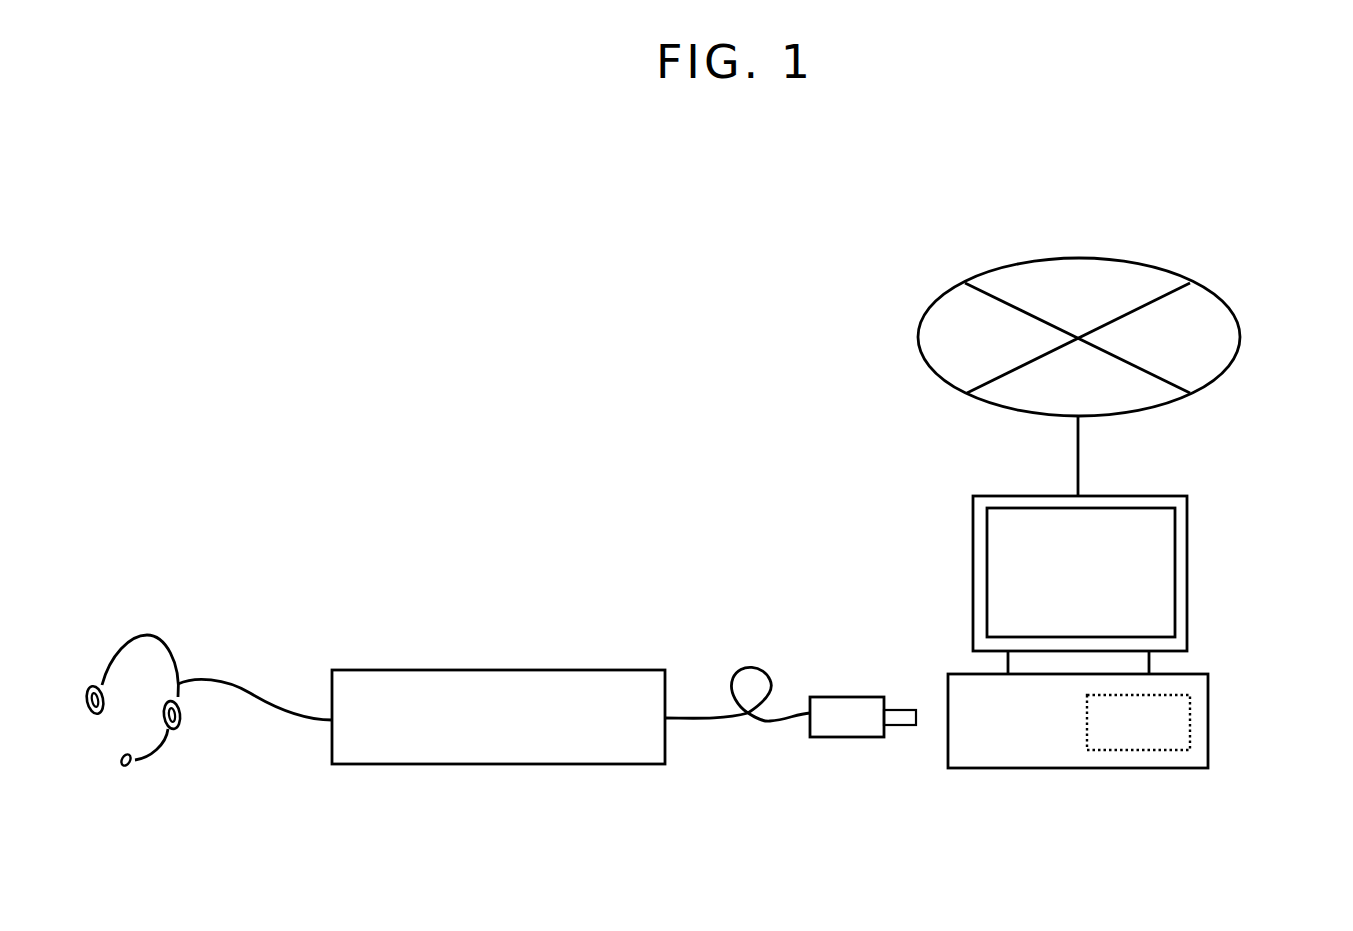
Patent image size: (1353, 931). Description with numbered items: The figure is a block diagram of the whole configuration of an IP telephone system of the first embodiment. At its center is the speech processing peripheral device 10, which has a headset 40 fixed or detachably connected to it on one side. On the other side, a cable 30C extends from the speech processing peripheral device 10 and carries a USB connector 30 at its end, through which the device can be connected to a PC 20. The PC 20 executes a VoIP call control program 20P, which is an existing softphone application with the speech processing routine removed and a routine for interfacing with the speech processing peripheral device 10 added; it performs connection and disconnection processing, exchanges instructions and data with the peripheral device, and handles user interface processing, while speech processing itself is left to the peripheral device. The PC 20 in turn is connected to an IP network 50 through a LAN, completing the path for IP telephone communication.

The speech processing peripheral device 10 is at (495, 670).
The PC 20 is at (1188, 548).
The VoIP call control program 20P is at (1190, 722).
The USB connector 30 is at (845, 740).
The cable 30C is at (753, 667).
The headset 40 is at (158, 636).
The IP network 50 is at (1079, 258).